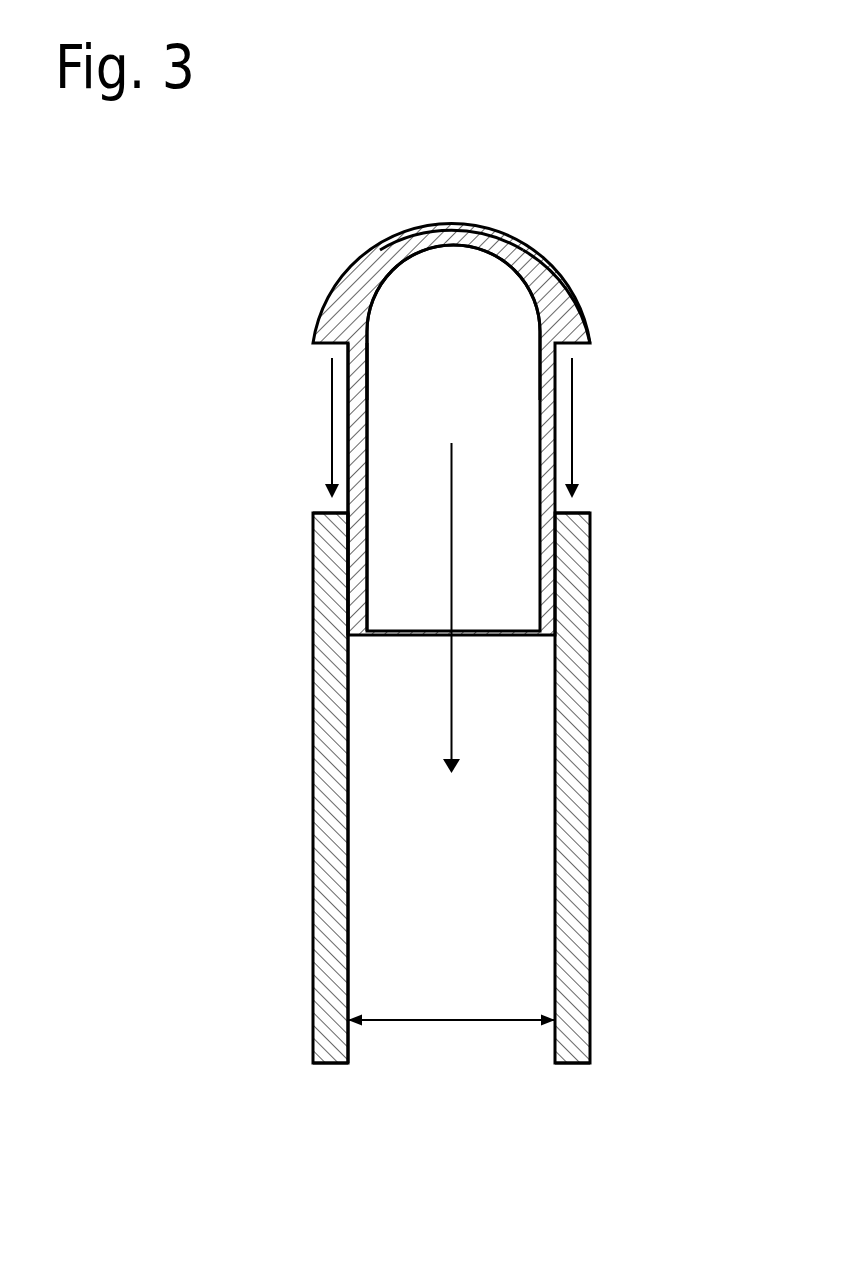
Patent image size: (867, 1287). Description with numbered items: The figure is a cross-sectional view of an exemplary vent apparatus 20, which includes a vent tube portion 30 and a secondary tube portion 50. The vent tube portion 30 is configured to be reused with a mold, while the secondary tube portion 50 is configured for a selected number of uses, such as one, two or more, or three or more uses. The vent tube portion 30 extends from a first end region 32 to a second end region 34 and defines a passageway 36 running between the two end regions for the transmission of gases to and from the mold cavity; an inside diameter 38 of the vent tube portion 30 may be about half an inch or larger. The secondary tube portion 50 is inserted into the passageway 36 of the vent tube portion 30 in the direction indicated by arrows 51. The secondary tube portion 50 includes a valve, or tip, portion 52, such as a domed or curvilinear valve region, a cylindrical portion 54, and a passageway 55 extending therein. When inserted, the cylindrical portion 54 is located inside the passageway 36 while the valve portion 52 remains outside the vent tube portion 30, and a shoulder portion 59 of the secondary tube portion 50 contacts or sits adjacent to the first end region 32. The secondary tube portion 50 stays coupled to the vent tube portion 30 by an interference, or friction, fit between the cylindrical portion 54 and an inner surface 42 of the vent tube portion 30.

The vent apparatus 20 is at (118, 213).
The vent tube portion 30 is at (313, 843).
The first end region 32 is at (576, 512).
The second end region 34 is at (592, 1043).
The passageway 36 is at (452, 883).
The inside diameter 38 is at (424, 1020).
The inner surface 42 is at (350, 762).
The secondary tube portion 50 is at (336, 260).
The arrows 51 is at (447, 548).
The valve portion 52 is at (462, 221).
The cylindrical portion 54 is at (351, 423).
The passageway 55 is at (486, 370).
The shoulder portion 59 is at (588, 313).